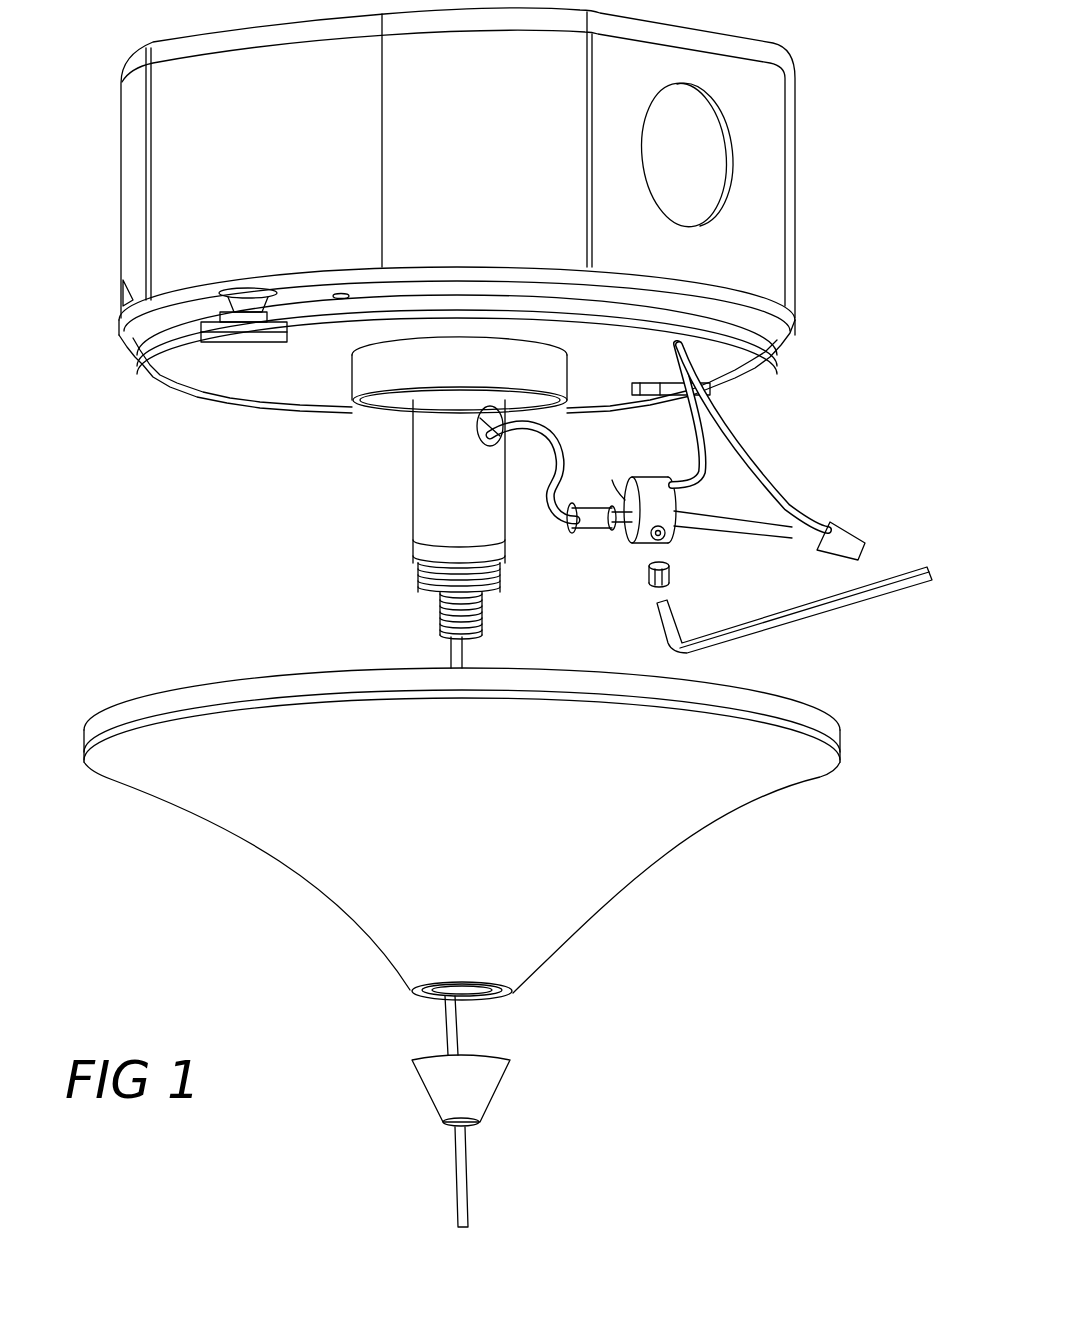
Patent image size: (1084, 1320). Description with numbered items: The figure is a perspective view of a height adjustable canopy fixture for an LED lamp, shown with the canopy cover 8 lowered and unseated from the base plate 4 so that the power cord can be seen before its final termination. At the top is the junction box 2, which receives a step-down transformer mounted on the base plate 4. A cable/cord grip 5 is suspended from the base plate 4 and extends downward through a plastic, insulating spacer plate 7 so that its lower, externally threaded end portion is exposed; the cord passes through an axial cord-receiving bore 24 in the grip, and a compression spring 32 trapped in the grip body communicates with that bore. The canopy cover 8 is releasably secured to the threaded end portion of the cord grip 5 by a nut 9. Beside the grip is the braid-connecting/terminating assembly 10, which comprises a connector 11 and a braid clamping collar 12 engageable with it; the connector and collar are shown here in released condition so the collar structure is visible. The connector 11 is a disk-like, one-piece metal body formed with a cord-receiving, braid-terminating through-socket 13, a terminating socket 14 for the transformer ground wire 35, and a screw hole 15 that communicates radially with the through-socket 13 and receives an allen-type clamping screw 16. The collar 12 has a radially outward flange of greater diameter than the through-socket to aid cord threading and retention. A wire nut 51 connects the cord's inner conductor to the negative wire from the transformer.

The junction box 2 is at (498, 163).
The base plate 4 is at (748, 316).
The insulating spacer plate 7 is at (253, 375).
The cord-receiving bore 24 is at (460, 430).
The cable/cord grip 5 is at (410, 478).
The terminating socket 14 is at (627, 490).
The braid clamping collar 12 is at (588, 532).
The through-socket 13 is at (686, 556).
The connector 11 is at (648, 478).
The screw hole 15 is at (672, 540).
The clamping screw 16 is at (672, 580).
The braid-connecting/terminating assembly 10 is at (651, 538).
The transformer ground wire 35 is at (700, 438).
The wire nut 51 is at (857, 537).
The canopy cover 8 is at (484, 835).
The nut 9 is at (485, 1085).
The compression spring 32 is at (462, 1162).